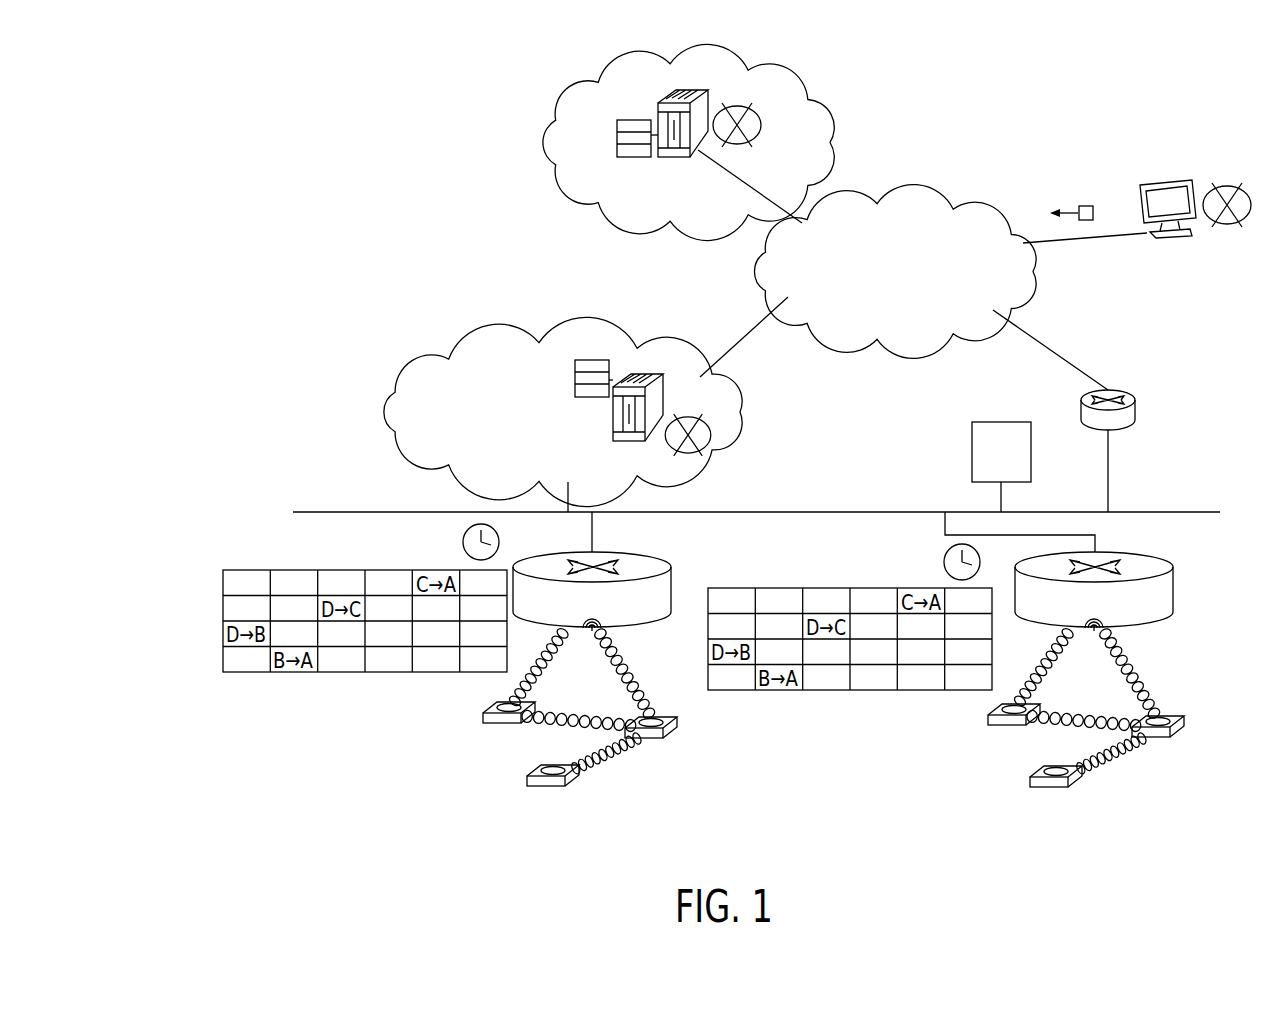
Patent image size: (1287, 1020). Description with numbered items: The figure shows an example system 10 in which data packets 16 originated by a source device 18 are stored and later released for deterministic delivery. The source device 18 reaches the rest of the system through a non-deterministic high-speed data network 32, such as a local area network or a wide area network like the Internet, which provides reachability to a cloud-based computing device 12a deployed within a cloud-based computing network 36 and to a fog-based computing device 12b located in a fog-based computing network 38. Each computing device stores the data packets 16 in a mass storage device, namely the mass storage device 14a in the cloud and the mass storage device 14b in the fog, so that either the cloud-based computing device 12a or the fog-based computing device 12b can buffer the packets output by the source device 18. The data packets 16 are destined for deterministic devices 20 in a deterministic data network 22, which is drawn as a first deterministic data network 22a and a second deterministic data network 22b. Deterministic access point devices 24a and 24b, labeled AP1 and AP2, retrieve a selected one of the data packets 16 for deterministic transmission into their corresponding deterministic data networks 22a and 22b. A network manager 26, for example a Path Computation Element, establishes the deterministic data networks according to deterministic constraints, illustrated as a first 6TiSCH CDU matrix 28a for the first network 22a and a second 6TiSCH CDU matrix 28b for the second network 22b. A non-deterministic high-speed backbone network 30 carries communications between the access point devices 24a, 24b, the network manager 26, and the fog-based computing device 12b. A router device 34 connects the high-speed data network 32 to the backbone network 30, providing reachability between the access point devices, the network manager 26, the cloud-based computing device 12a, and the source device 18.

The system 10 is at (506, 242).
The cloud-based computing device 12a is at (700, 92).
The fog-based computing device 12b is at (650, 376).
The mass storage device 14a is at (640, 118).
The mass storage device 14b is at (590, 358).
The data packets 16 is at (1087, 205).
The source device 18 is at (1170, 182).
The deterministic devices 20 is at (500, 724).
The deterministic data network 22 is at (152, 727).
The deterministic data network 22a is at (690, 804).
The deterministic data network 22b is at (883, 798).
The deterministic access point device 24a is at (640, 560).
The deterministic access point device 24b is at (1166, 571).
The network manager 26 is at (990, 422).
The first 6TiSCH CDU matrix 28a is at (243, 570).
The second 6TiSCH CDU matrix 28b is at (728, 588).
The high-speed backbone network 30 is at (327, 512).
The high-speed data network 32 is at (930, 203).
The router device 34 is at (1117, 390).
The cloud-based computing network 36 is at (780, 62).
The fog-based computing network 38 is at (490, 343).